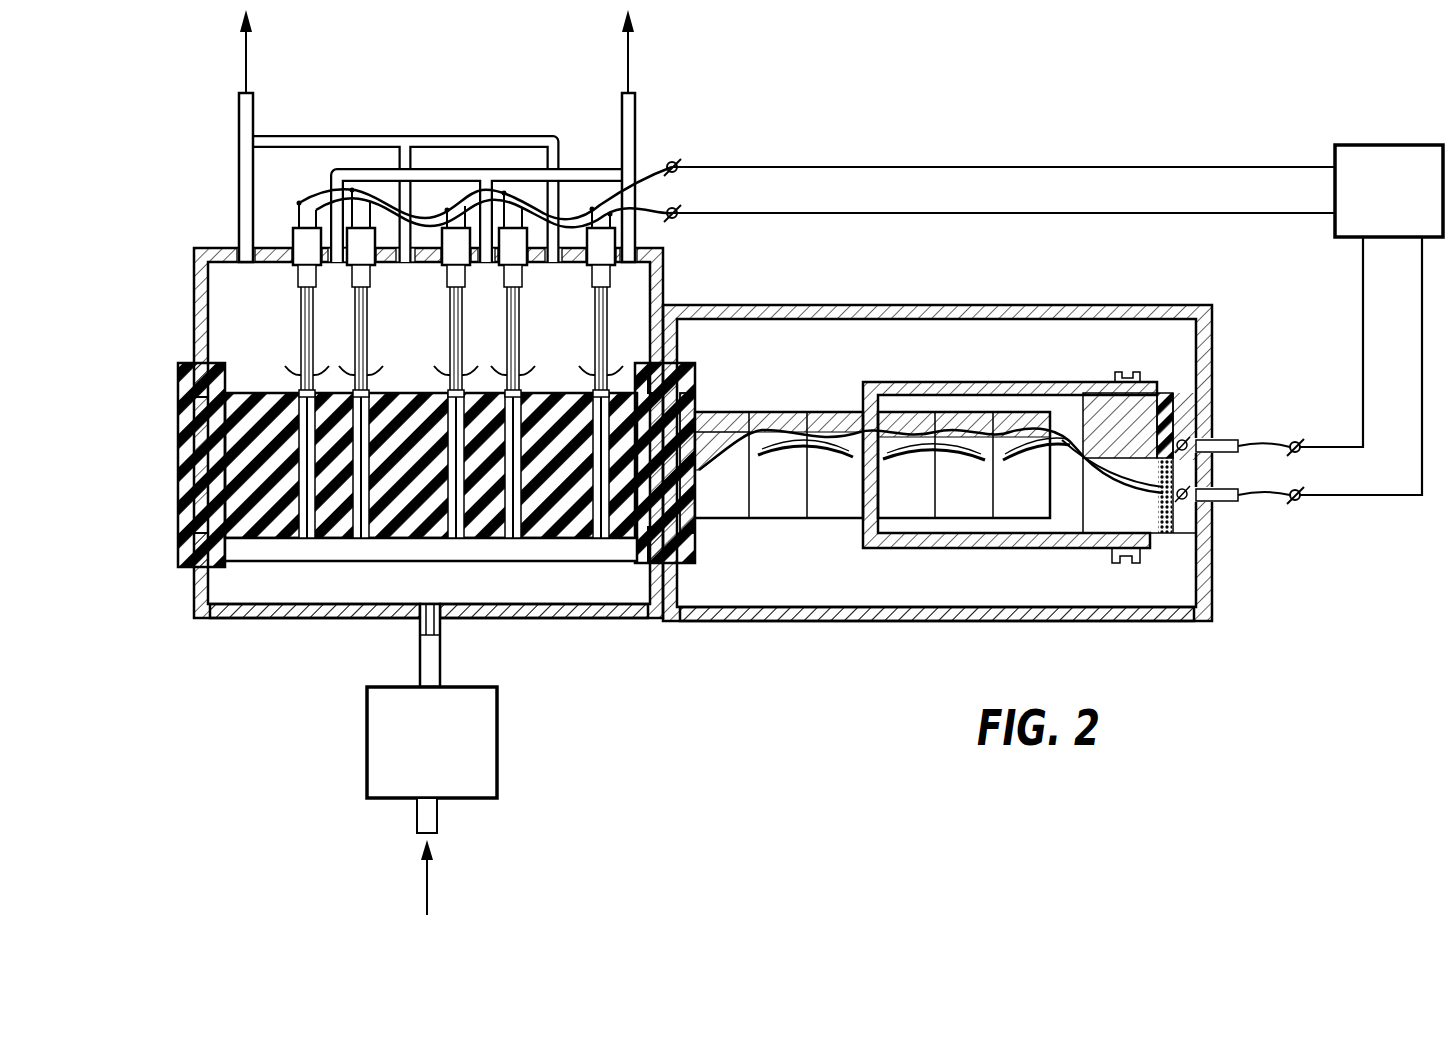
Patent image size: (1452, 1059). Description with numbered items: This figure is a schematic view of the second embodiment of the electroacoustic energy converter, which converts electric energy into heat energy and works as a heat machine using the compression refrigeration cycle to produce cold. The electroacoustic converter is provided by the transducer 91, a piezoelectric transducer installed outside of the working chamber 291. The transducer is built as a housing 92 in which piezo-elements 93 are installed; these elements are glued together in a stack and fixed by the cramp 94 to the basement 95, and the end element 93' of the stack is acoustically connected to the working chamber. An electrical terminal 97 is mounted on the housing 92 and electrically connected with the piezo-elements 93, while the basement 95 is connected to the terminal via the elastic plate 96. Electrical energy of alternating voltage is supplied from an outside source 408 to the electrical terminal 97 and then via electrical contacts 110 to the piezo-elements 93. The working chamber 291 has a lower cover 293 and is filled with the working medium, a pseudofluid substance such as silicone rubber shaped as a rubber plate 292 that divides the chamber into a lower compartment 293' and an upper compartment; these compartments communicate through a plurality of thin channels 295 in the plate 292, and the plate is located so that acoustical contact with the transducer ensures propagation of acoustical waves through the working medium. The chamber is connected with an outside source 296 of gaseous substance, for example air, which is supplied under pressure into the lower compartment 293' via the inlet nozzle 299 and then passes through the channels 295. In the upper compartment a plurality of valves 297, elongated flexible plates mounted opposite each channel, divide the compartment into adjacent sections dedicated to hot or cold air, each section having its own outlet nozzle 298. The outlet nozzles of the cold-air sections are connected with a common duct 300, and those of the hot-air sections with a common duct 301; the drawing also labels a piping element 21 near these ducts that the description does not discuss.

The pipe system 21 is at (396, 150).
The transducer 91 is at (1092, 305).
The housing 92 is at (1125, 612).
The piezo-elements 93 is at (882, 498).
The element of the stack 93' is at (722, 449).
The cramp 94 is at (1012, 382).
The basement 95 is at (1100, 412).
The elastic plate 96 is at (1160, 540).
The electrical terminal 97 is at (1186, 402).
The electrical contacts 110 is at (1132, 515).
The working chamber 291 is at (178, 332).
The rubber plate 292 is at (203, 490).
The lower cover 293 is at (315, 636).
The lower compartment 293' is at (544, 626).
The thin channels 295 is at (355, 525).
The outside source of the gaseous substance 296 is at (392, 720).
The valves 297 is at (300, 318).
The outlet nozzle 298 is at (253, 180).
The inlet nozzle 299 is at (438, 620).
The common duct 300 is at (253, 107).
The common duct 301 is at (635, 105).
The control unit 408 is at (1360, 160).